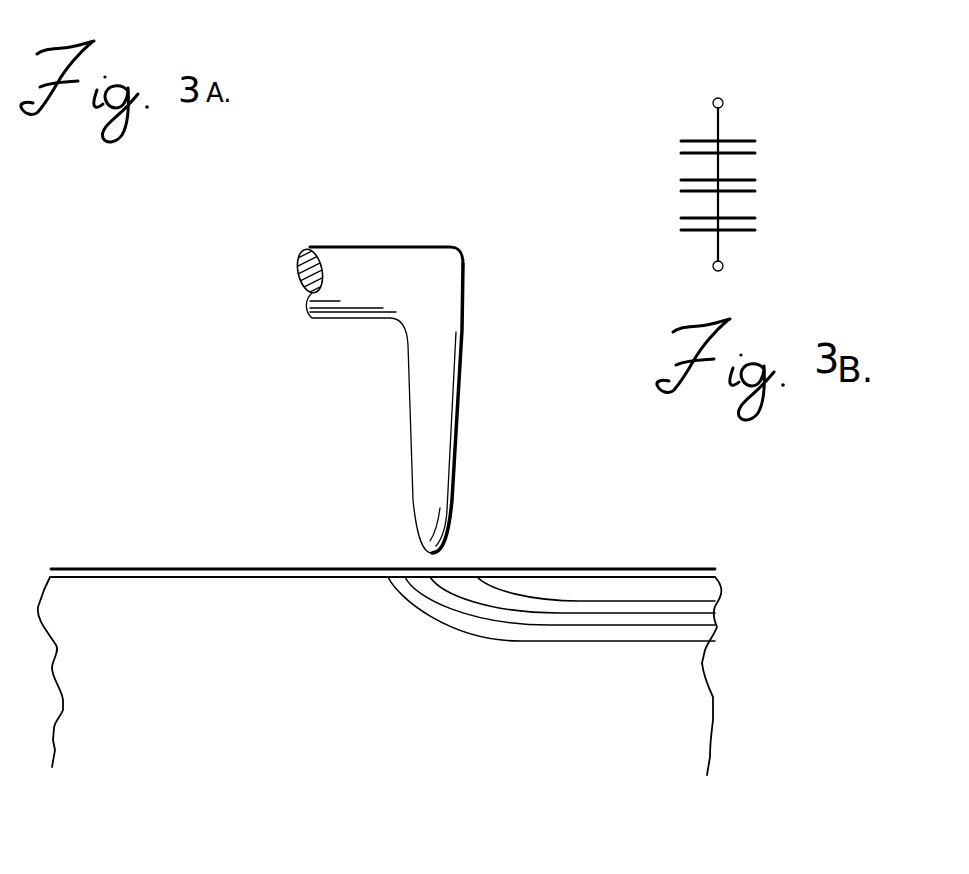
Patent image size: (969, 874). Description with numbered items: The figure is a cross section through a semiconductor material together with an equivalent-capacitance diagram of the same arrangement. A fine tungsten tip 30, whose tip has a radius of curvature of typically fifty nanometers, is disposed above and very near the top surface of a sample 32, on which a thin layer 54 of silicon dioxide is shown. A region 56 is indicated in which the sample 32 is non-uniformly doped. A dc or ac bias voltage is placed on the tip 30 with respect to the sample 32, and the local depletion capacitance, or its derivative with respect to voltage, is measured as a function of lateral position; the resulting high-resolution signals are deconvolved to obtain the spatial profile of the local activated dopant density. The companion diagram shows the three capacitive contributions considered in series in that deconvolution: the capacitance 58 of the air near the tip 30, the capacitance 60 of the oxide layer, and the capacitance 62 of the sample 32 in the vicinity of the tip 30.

In FIG. 3A, the tungsten tip 30 is at (418, 384).
In FIG. 3A, the sample 32 is at (250, 592).
In FIG. 3A, the thin layer of SiO2 54 is at (118, 570).
In FIG. 3A, the region 56 is at (507, 617).
In FIG. 3B, the capacitance of the air 58 is at (739, 141).
In FIG. 3B, the capacitance of the oxide layer 60 is at (740, 180).
In FIG. 3B, the capacitance of the sample 62 is at (740, 218).